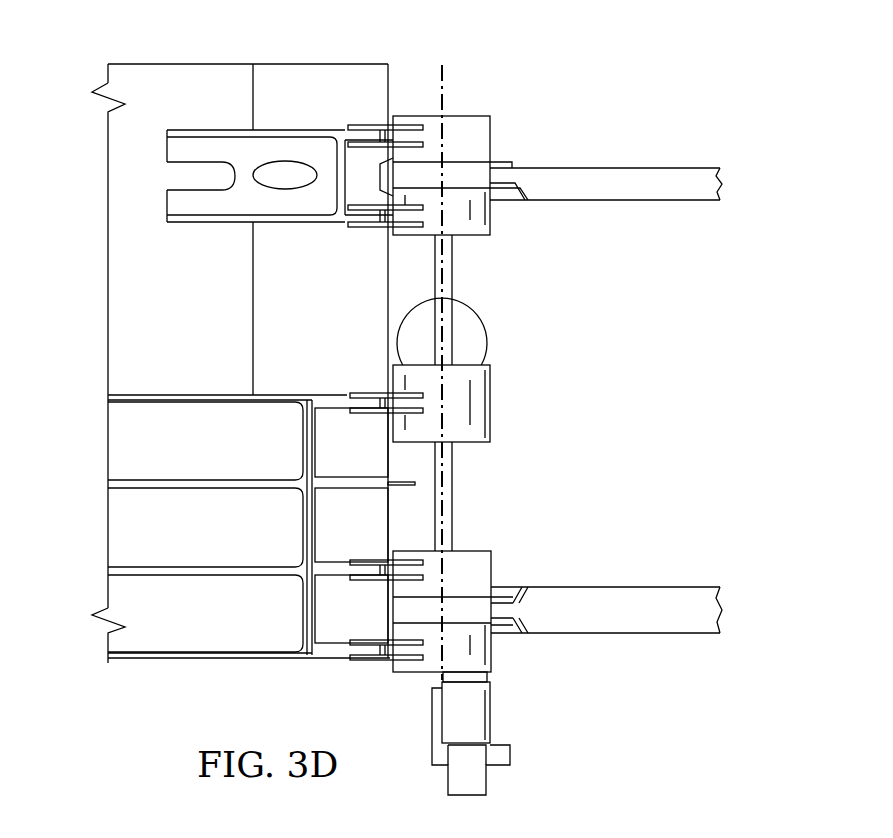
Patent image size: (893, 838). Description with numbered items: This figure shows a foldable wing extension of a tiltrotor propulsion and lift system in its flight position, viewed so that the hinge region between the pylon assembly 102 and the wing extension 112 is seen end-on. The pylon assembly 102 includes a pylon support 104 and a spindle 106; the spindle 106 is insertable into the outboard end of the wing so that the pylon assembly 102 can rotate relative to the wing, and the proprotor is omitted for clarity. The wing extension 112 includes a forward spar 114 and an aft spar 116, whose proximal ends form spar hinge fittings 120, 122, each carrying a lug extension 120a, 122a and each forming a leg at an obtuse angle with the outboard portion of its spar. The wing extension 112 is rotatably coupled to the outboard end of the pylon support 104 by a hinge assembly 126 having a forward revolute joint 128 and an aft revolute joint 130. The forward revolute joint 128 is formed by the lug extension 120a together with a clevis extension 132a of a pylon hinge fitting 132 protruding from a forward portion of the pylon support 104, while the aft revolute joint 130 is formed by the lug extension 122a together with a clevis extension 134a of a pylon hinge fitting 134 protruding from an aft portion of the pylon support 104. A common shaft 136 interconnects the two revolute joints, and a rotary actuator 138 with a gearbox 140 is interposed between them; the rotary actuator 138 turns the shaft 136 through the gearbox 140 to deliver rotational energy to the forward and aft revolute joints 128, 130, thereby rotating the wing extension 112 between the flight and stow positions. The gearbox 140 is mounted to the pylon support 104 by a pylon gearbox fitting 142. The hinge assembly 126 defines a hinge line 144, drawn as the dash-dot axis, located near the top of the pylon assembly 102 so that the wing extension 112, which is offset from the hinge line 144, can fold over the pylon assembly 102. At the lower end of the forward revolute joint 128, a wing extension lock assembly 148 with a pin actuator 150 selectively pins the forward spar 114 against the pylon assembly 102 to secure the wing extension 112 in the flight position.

The pylon assembly 102 is at (150, 655).
The pylon support 104 is at (253, 302).
The spindle 106 is at (108, 535).
The wing extension 112 is at (622, 155).
The aft spar 116 is at (697, 168).
The forward spar 114 is at (690, 587).
The spar hinge fitting 120 is at (551, 592).
The lug extension 120a is at (509, 610).
The spar hinge fitting 122 is at (547, 165).
The lug extension 122a is at (509, 181).
The hinge assembly 126 is at (452, 275).
The forward revolute joint 128 is at (408, 672).
The aft revolute joint 130 is at (480, 116).
The pylon hinge fitting 132 is at (318, 658).
The clevis extension 132a is at (368, 665).
The pylon hinge fitting 134 is at (232, 130).
The clevis extension 134a is at (415, 116).
The common shaft 136 is at (452, 492).
The rotary actuator 138 is at (487, 343).
The gearbox 140 is at (490, 408).
The pylon gearbox fitting 142 is at (345, 393).
The hinge line 144 is at (445, 78).
The wing extension lock assembly 148 is at (487, 780).
The pin actuator 150 is at (490, 708).